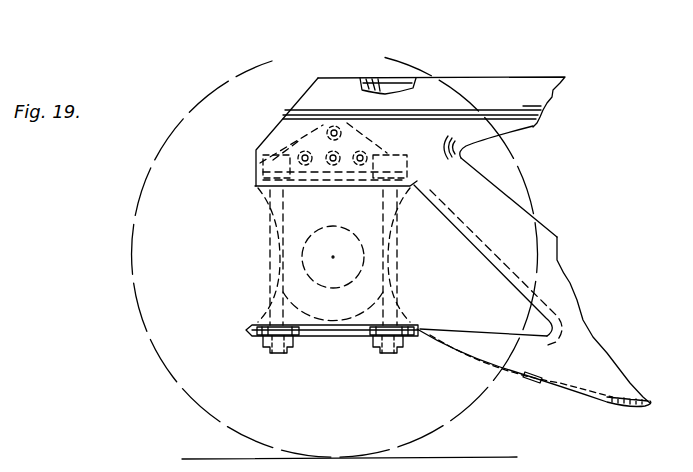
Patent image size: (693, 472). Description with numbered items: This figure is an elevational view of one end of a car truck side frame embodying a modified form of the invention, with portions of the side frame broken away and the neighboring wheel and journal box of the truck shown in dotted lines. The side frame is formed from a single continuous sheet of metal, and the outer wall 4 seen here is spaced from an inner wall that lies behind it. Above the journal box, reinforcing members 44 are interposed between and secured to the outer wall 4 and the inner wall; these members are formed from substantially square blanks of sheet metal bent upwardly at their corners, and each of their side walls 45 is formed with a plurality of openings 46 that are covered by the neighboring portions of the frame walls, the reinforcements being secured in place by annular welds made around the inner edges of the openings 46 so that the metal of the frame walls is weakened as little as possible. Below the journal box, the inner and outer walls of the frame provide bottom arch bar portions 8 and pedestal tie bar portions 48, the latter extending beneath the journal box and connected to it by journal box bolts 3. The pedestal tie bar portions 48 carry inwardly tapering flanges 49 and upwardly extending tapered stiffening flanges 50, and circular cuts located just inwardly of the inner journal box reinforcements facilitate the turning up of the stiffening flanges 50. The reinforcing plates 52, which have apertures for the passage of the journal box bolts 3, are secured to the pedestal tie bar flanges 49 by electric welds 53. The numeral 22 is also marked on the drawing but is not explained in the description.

The journal box bolts 3 is at (280, 356).
The outer wall 4 is at (493, 208).
The bottom arch bar portions 8 is at (553, 242).
The flanges 22 is at (250, 172).
The reinforcing members 44 is at (334, 188).
The side walls 45 is at (274, 133).
The openings 46 is at (345, 133).
The pedestal tie bar portions 48 is at (600, 370).
The inwardly tapering flanges 49 is at (331, 324).
The tapered stiffening flanges 50 is at (477, 331).
The reinforcing plates 52 is at (259, 343).
The electric welds 53 is at (367, 336).